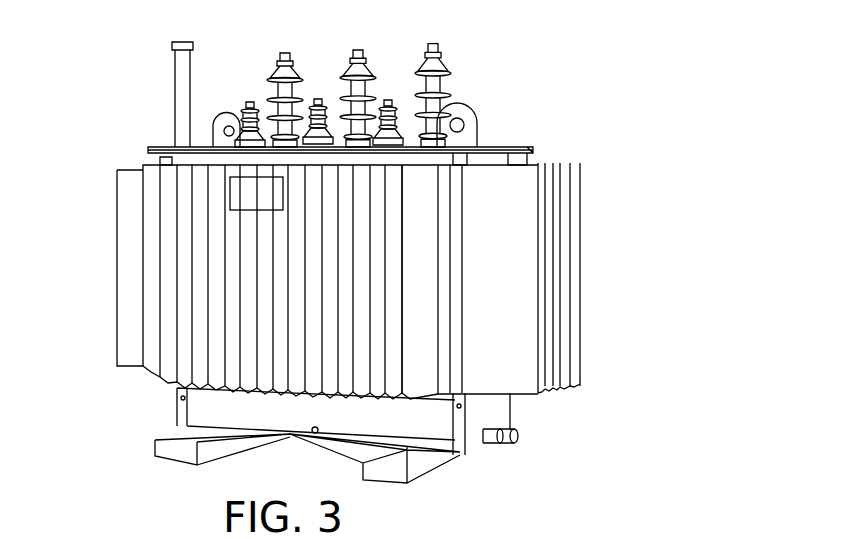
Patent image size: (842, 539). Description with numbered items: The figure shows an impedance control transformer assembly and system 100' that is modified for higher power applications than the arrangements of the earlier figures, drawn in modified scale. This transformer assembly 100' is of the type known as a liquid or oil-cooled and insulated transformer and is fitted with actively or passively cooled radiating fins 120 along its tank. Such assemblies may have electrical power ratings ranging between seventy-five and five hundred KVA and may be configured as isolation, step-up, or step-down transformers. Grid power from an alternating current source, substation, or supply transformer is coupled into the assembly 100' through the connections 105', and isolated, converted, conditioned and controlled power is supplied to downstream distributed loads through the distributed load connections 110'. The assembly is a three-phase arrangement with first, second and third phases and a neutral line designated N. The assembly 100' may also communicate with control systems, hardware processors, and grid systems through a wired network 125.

The impedance control transformer assembly and system 100' is at (338, 255).
The connections 105' is at (383, 80).
The distributed load connections 110' is at (295, 75).
The radiating fins 120 is at (150, 372).
The wired network 125 is at (492, 405).